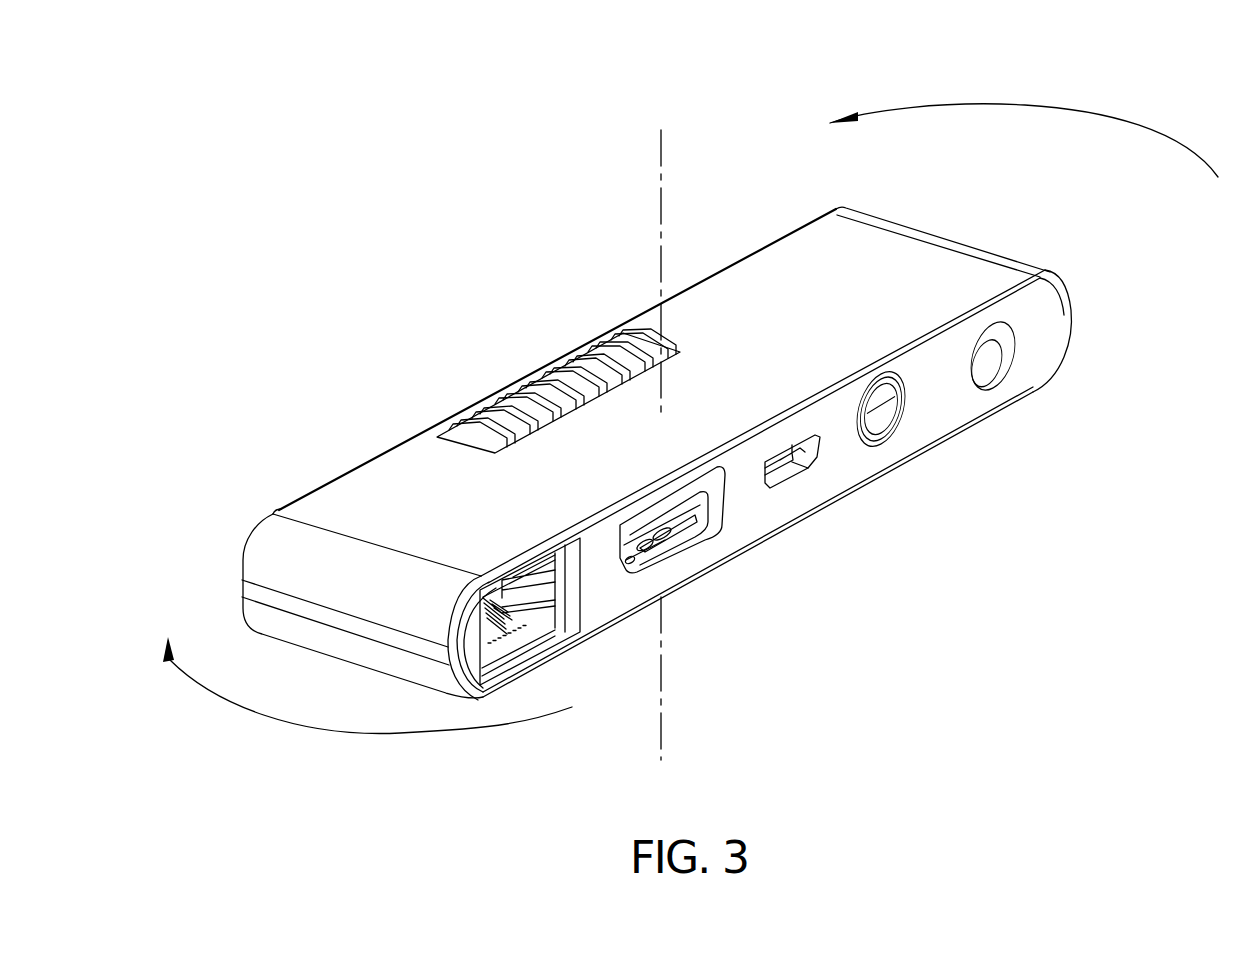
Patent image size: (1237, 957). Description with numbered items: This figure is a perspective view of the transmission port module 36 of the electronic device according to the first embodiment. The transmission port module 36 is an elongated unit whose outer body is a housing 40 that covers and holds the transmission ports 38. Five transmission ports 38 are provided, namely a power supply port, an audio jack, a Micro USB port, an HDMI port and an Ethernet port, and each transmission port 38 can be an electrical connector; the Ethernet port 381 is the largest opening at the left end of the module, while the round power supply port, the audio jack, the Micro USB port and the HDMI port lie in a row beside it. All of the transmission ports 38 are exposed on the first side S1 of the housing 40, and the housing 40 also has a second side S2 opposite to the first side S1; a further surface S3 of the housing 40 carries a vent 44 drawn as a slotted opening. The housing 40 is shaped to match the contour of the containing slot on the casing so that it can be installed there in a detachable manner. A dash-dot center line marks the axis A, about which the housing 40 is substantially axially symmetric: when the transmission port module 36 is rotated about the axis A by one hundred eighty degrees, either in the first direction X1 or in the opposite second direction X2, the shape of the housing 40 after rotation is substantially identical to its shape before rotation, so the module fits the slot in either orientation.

The transmission port module 36 is at (440, 138).
The housing 40 is at (788, 246).
The transmission ports 38 is at (1000, 372).
The network connection port 381 is at (552, 633).
The heat dissipation vent 44 is at (557, 393).
The first side S1 is at (1060, 312).
The second side S2 is at (307, 495).
The top surface S3 is at (418, 475).
The axis A is at (661, 730).
The first direction X1 is at (1133, 122).
The second direction X2 is at (285, 720).